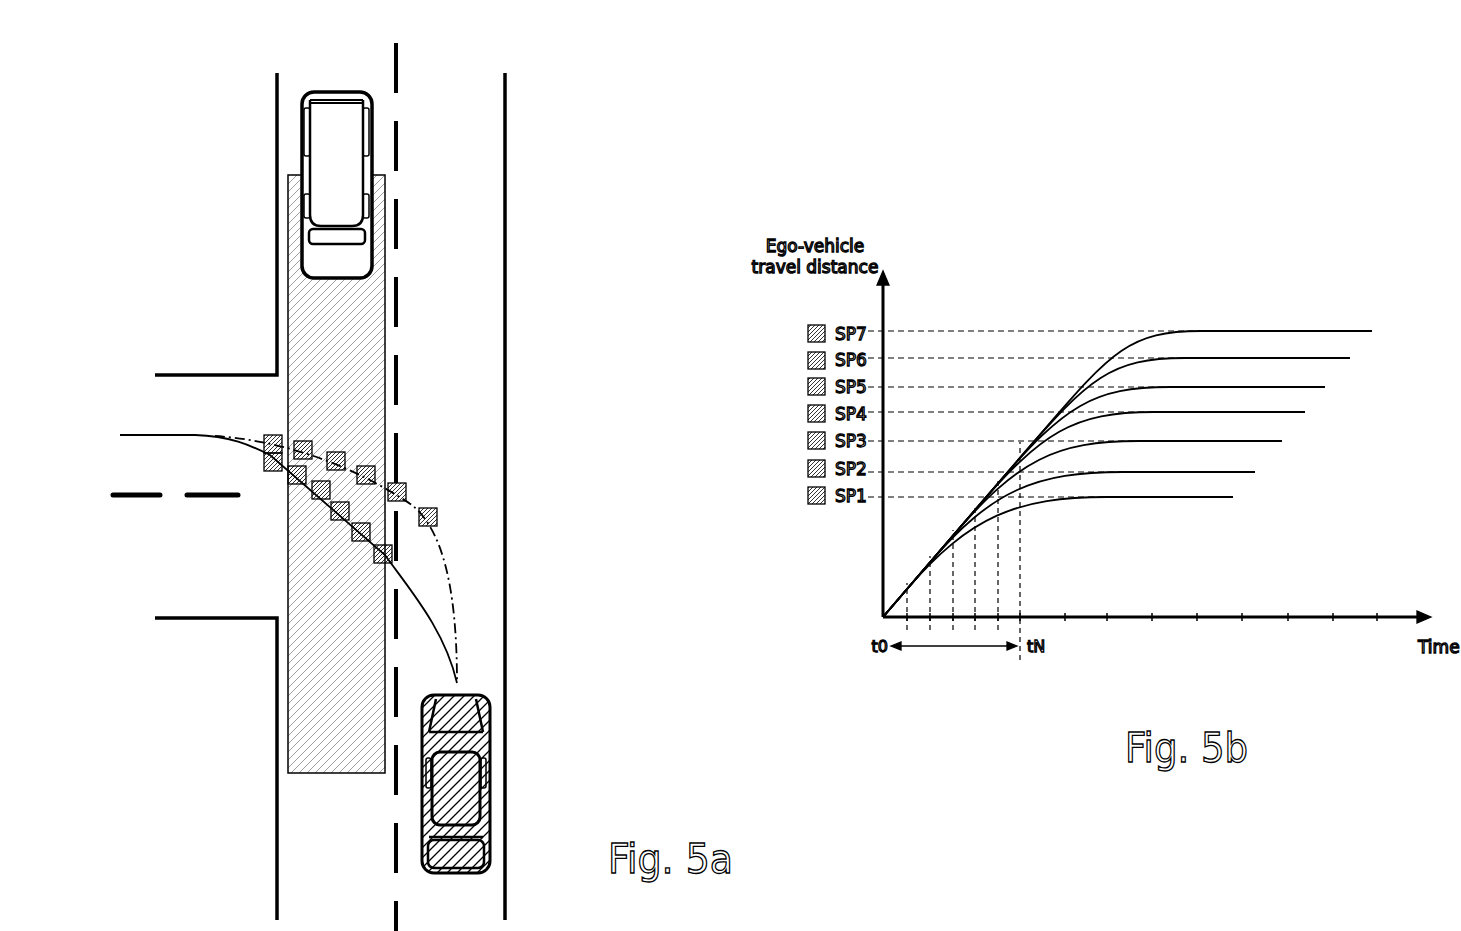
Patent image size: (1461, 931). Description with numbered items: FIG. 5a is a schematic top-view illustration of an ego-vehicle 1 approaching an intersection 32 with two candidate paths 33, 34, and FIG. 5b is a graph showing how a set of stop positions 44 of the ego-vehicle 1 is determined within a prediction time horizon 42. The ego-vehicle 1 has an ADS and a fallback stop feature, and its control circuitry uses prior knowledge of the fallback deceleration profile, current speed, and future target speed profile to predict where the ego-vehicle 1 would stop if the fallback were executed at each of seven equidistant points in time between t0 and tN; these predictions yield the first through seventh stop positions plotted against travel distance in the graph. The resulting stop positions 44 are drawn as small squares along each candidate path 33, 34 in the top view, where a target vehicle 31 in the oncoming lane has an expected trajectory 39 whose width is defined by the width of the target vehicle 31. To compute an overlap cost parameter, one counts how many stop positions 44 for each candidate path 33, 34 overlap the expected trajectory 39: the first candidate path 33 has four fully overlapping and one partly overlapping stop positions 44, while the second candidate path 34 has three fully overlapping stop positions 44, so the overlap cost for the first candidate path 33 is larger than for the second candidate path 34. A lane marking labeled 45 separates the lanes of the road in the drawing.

In FIG. 5A, the ego-vehicle 1 is at (490, 770).
In FIG. 5A, the target vehicle 31 is at (372, 110).
In FIG. 5A, the intersection 32 is at (522, 202).
In FIG. 5A, the first candidate path 33 is at (446, 650).
In FIG. 5A, the second candidate path 34 is at (450, 545).
In FIG. 5A, the expected trajectory 39 is at (300, 724).
In FIG. 5B, the prediction time horizon 42 is at (950, 652).
In FIG. 5A, the stop positions 44 is at (272, 434).
In FIG. 5B, the stop positions 44 is at (806, 336).
In FIG. 5A, the lane marking 45 is at (400, 312).